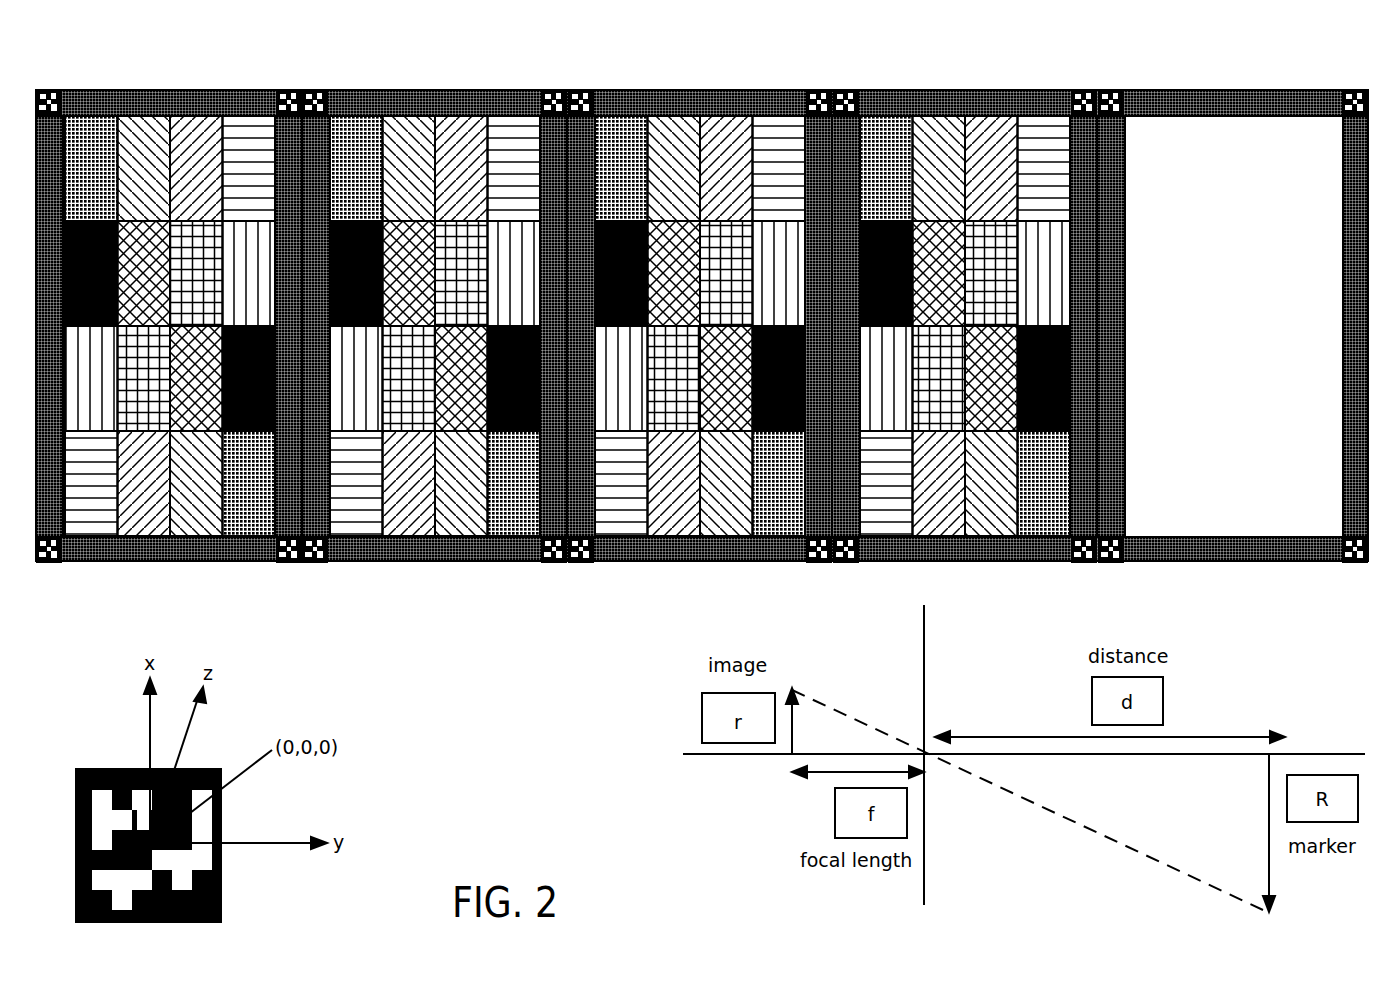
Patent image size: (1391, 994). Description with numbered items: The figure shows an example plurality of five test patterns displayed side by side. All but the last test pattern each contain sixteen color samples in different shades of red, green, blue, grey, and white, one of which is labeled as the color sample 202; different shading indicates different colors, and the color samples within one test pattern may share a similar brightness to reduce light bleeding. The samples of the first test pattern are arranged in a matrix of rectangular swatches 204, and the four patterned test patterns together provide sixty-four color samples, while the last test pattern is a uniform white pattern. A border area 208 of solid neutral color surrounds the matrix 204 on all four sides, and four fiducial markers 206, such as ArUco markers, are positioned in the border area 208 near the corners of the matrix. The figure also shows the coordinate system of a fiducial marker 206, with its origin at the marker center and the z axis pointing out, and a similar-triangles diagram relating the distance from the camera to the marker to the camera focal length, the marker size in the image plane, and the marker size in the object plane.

The color sample 202 is at (83, 142).
The matrix of rectangular swatches 204 is at (248, 116).
The fiducial marker 206 is at (92, 768).
The border area 208 is at (192, 560).